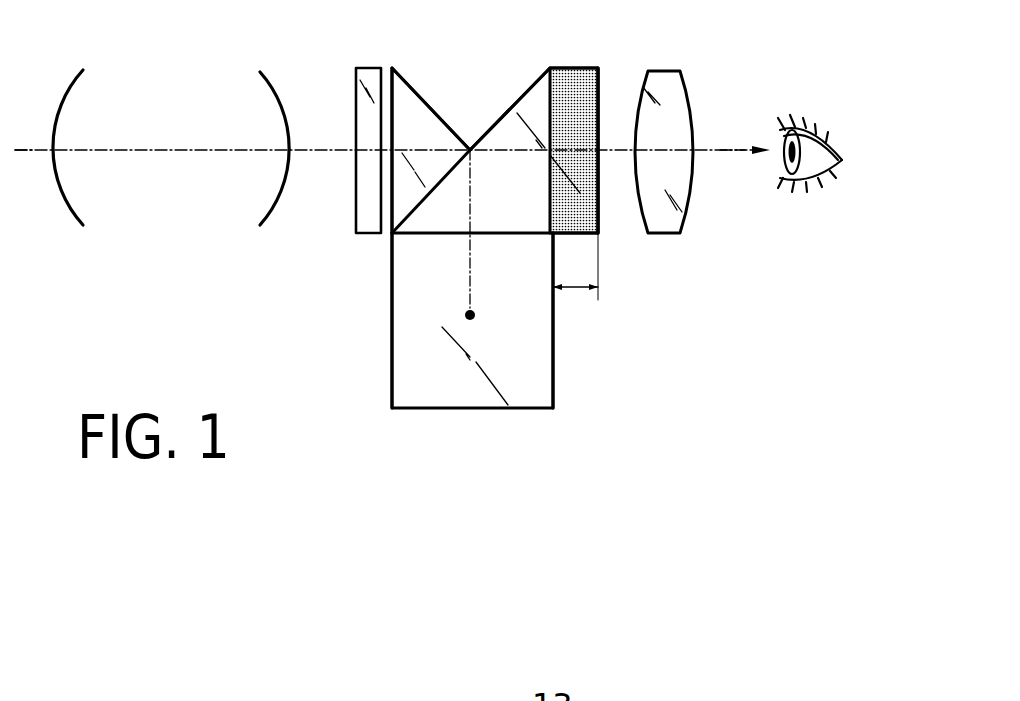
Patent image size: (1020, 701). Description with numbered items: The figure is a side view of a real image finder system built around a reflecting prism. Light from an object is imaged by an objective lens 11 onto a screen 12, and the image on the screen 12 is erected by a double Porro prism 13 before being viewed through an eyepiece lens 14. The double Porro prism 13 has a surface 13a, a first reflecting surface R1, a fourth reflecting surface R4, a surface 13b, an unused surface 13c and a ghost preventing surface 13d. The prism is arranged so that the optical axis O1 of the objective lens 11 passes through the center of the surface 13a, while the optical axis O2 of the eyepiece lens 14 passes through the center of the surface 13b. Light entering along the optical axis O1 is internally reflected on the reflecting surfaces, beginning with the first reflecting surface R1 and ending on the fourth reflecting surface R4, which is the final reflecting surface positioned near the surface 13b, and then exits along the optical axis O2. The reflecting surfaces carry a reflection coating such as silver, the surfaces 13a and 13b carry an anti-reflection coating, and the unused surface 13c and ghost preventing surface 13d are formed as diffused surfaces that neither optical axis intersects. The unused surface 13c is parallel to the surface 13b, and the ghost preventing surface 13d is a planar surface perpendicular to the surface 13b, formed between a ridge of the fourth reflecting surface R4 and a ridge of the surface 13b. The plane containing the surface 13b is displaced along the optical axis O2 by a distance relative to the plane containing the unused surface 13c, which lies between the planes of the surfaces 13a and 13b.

The objective lens 11 is at (178, 170).
The screen 12 is at (367, 66).
The double Porro prism 13 is at (470, 383).
The surface 13a is at (390, 207).
The surface 13b is at (602, 223).
The unused surface 13c is at (390, 357).
The ghost preventing surface 13d is at (570, 68).
The eyepiece lens 14 is at (655, 70).
The first reflecting surface R1 is at (413, 88).
The fourth reflecting surface R4 is at (530, 88).
The optical axis of the objective lens O1 is at (22, 146).
The optical axis of the eyepiece lens O2 is at (733, 147).